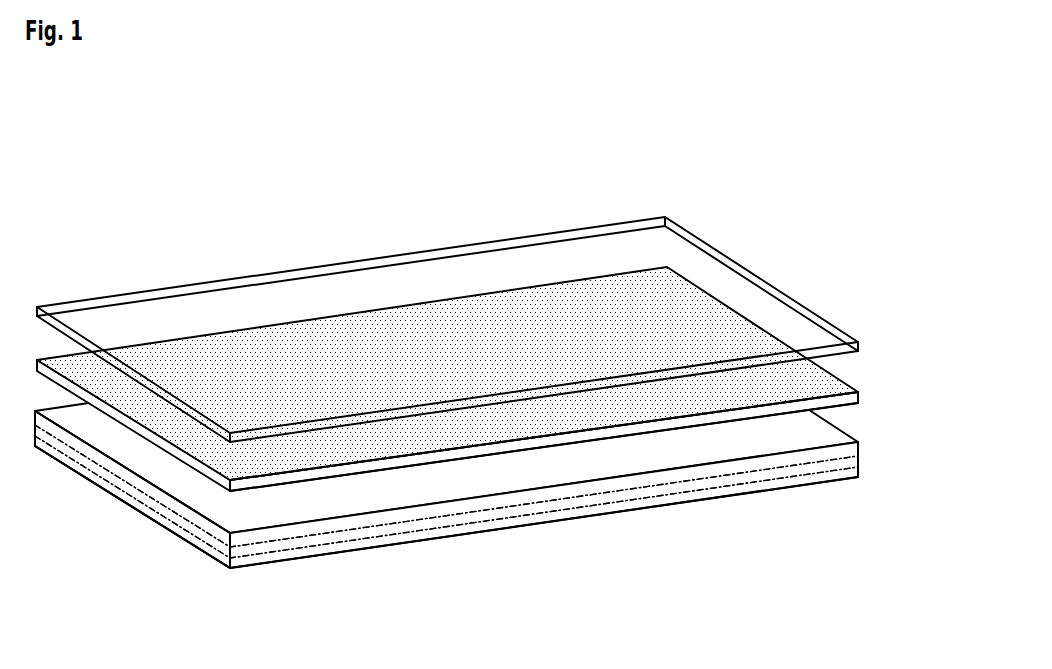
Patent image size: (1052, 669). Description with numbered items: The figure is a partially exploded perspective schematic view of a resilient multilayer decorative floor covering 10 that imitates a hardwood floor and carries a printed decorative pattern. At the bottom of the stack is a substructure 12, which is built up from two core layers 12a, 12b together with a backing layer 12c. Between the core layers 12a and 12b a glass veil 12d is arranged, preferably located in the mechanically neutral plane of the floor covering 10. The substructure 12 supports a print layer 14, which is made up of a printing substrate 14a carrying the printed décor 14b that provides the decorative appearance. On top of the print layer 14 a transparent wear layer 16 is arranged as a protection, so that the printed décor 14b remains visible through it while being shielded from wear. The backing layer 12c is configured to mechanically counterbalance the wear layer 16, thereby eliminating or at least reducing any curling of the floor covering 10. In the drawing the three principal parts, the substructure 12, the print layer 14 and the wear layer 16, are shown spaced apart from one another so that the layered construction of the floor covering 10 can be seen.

The floor covering 10 is at (193, 252).
The substructure 12 is at (472, 459).
The core layer 12a is at (427, 507).
The core layer 12b is at (565, 505).
The backing layer 12c is at (713, 497).
The glass veil 12d is at (183, 518).
The print layer 14 is at (473, 439).
The printing substrate 14a is at (332, 473).
The printed décor 14b is at (267, 470).
The wear layer 16 is at (862, 345).